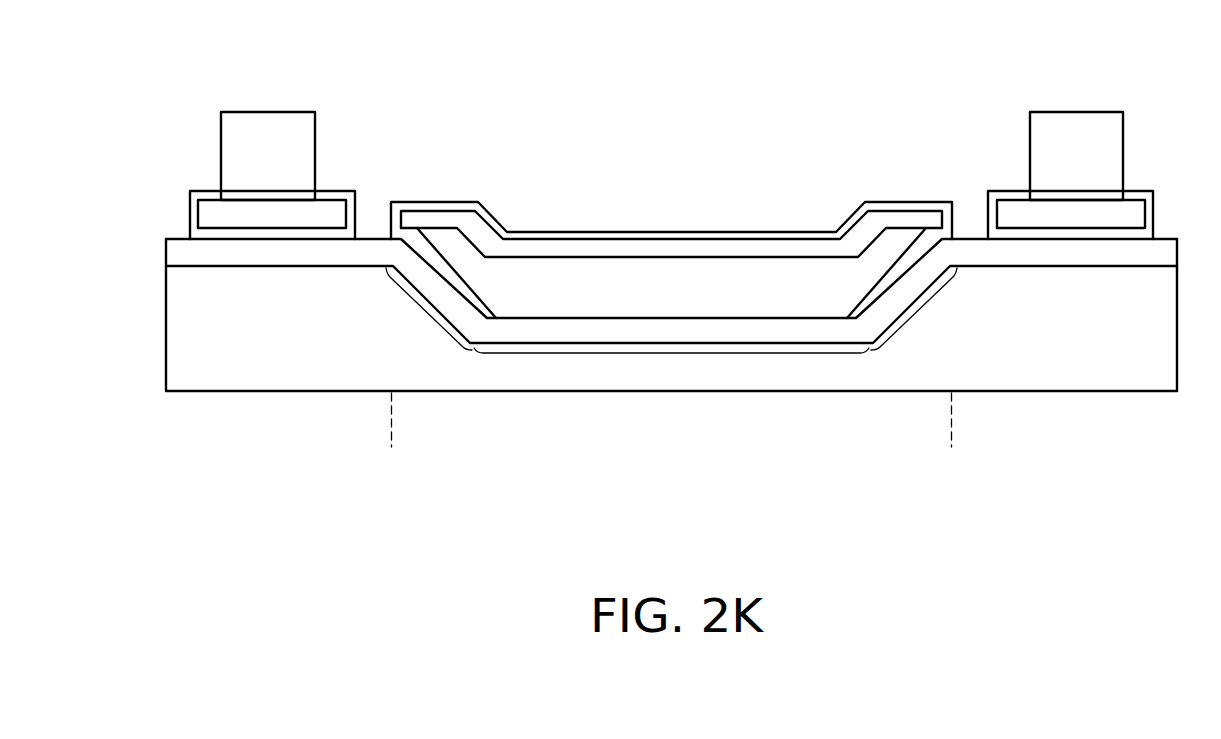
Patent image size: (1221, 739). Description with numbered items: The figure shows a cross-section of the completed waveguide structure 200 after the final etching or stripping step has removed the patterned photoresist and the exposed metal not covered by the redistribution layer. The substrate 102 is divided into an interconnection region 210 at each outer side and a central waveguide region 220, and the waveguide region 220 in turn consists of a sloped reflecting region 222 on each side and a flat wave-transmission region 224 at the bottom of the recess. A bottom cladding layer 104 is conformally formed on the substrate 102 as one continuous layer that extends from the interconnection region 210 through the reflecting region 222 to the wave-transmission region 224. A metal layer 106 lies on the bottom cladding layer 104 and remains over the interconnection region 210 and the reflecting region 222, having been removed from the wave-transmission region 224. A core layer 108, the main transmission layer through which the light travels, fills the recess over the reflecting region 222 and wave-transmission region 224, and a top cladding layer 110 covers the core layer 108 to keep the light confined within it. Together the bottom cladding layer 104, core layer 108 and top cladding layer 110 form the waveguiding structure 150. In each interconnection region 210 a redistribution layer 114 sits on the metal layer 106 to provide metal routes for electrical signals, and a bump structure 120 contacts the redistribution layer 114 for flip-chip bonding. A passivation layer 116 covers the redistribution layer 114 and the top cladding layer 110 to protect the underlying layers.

The waveguide structure 200 is at (698, 38).
The substrate 102 is at (178, 330).
The bottom cladding layer 104 is at (178, 249).
The metal layer 106 is at (196, 233).
The core layer 108 is at (672, 296).
The top cladding layer 110 is at (612, 246).
The redistribution layer 114 is at (208, 212).
The passivation layer 116 is at (200, 193).
The bump structure 120 is at (237, 127).
The waveguiding structure 150 is at (755, 160).
The interconnection region 210 is at (391, 445).
The waveguide region 220 is at (951, 445).
The reflecting region 222 is at (430, 314).
The wave-transmission region 224 is at (672, 357).